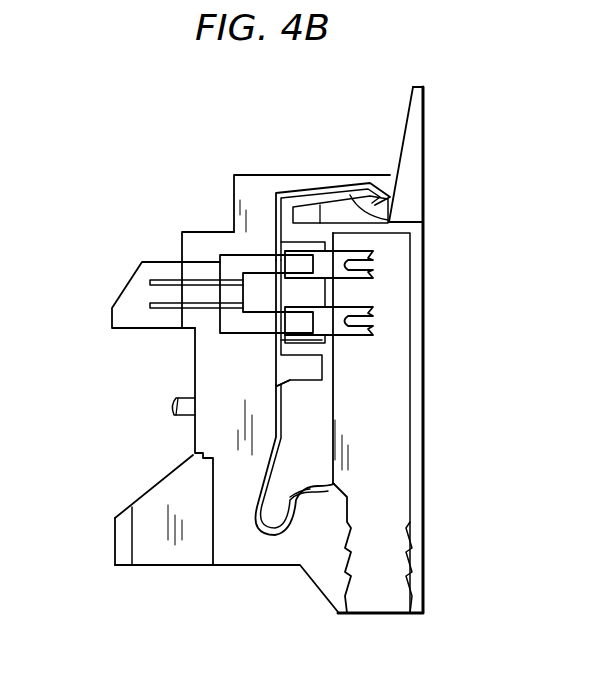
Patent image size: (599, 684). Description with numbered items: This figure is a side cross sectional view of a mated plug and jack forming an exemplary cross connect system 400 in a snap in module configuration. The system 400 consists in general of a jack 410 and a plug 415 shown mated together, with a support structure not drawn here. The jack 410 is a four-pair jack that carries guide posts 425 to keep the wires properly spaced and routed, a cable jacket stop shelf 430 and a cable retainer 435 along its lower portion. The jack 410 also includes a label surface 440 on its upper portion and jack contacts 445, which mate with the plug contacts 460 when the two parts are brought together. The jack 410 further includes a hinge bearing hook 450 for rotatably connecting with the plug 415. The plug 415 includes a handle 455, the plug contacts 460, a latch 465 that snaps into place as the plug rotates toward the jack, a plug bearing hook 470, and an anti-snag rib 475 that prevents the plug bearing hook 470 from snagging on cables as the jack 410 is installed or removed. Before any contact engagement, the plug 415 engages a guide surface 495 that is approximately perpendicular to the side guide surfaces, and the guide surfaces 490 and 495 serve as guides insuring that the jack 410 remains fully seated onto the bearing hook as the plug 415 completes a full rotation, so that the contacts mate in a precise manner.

The cross connect system 400 is at (178, 122).
The jack 410 is at (234, 207).
The plug 415 is at (410, 180).
The guide posts 425 is at (172, 401).
The cable jacket stop shelf 430 is at (197, 461).
The cable retainer 435 is at (167, 548).
The label surface 440 is at (283, 175).
The jack contacts 445 is at (98, 262).
The hinge bearing hook 450 is at (313, 508).
The handle 455 is at (424, 112).
The plug contacts 460 is at (375, 265).
The latch 465 is at (412, 213).
The plug bearing hook 470 is at (276, 503).
The anti-snag rib 475 is at (323, 576).
The guide surface 490 is at (287, 388).
The guide surface 495 is at (277, 383).